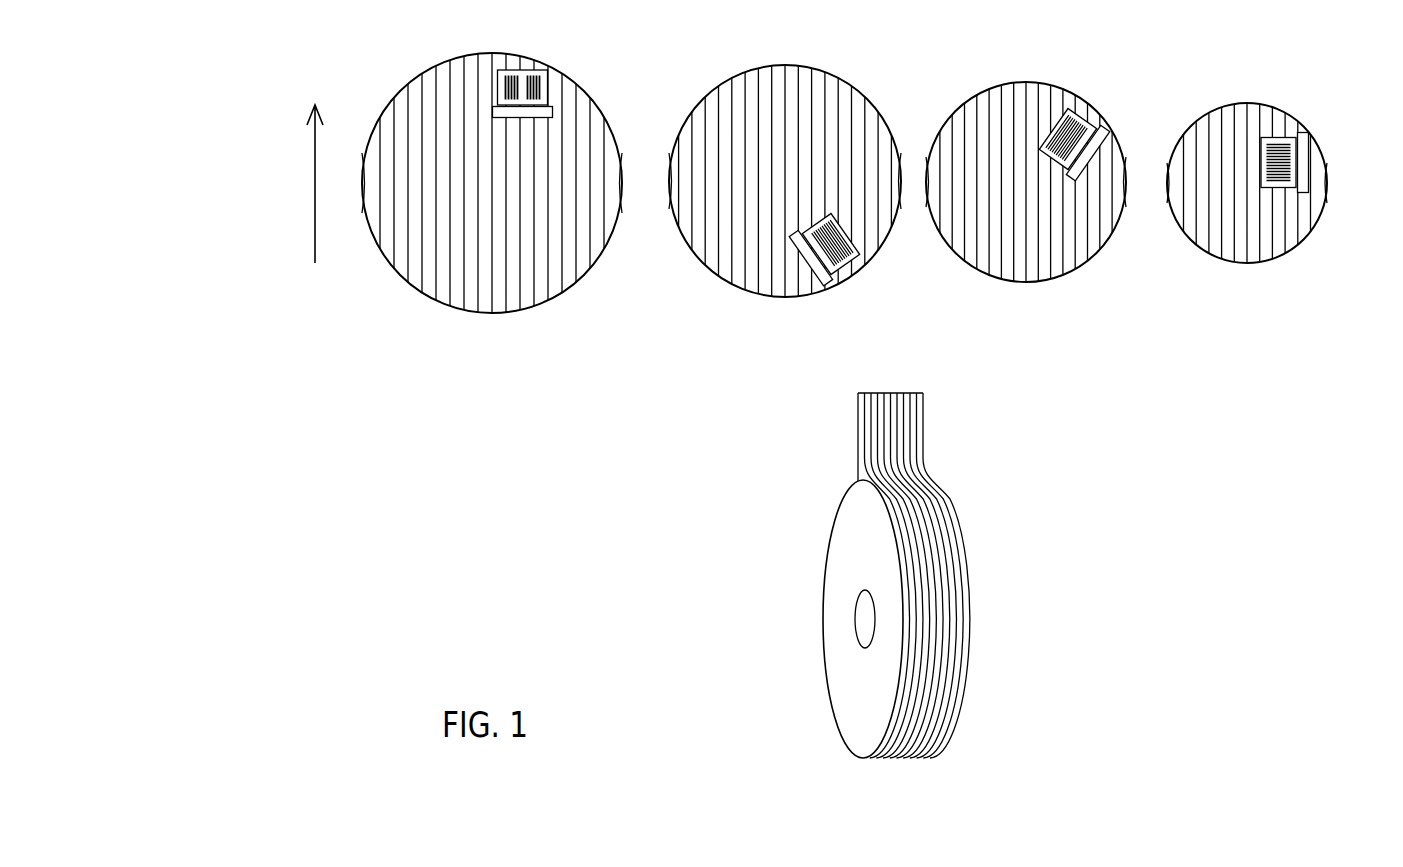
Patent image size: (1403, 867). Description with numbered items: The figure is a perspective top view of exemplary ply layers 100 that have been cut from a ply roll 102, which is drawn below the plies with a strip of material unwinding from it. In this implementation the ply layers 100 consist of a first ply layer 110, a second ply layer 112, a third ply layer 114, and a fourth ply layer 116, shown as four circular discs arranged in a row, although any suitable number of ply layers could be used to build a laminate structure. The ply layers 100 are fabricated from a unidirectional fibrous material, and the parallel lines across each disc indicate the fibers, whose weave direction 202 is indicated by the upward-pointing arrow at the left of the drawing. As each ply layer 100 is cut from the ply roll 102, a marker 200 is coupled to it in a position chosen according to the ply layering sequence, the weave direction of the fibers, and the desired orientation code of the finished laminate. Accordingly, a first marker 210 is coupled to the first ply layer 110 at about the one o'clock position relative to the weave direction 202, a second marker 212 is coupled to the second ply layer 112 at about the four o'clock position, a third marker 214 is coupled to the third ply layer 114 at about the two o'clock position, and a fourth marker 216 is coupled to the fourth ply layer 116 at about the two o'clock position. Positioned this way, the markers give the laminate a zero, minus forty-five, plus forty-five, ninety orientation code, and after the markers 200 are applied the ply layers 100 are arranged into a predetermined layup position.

The ply layers 100 is at (673, 116).
The ply roll 102 is at (850, 702).
The first ply layer 110 is at (428, 68).
The second ply layer 112 is at (757, 70).
The third ply layer 114 is at (972, 98).
The fourth ply layer 116 is at (1208, 113).
The marker 200 is at (530, 67).
The weave direction 202 is at (315, 184).
The first marker 210 is at (491, 58).
The second marker 212 is at (856, 248).
The third marker 214 is at (1078, 122).
The fourth marker 216 is at (1287, 138).